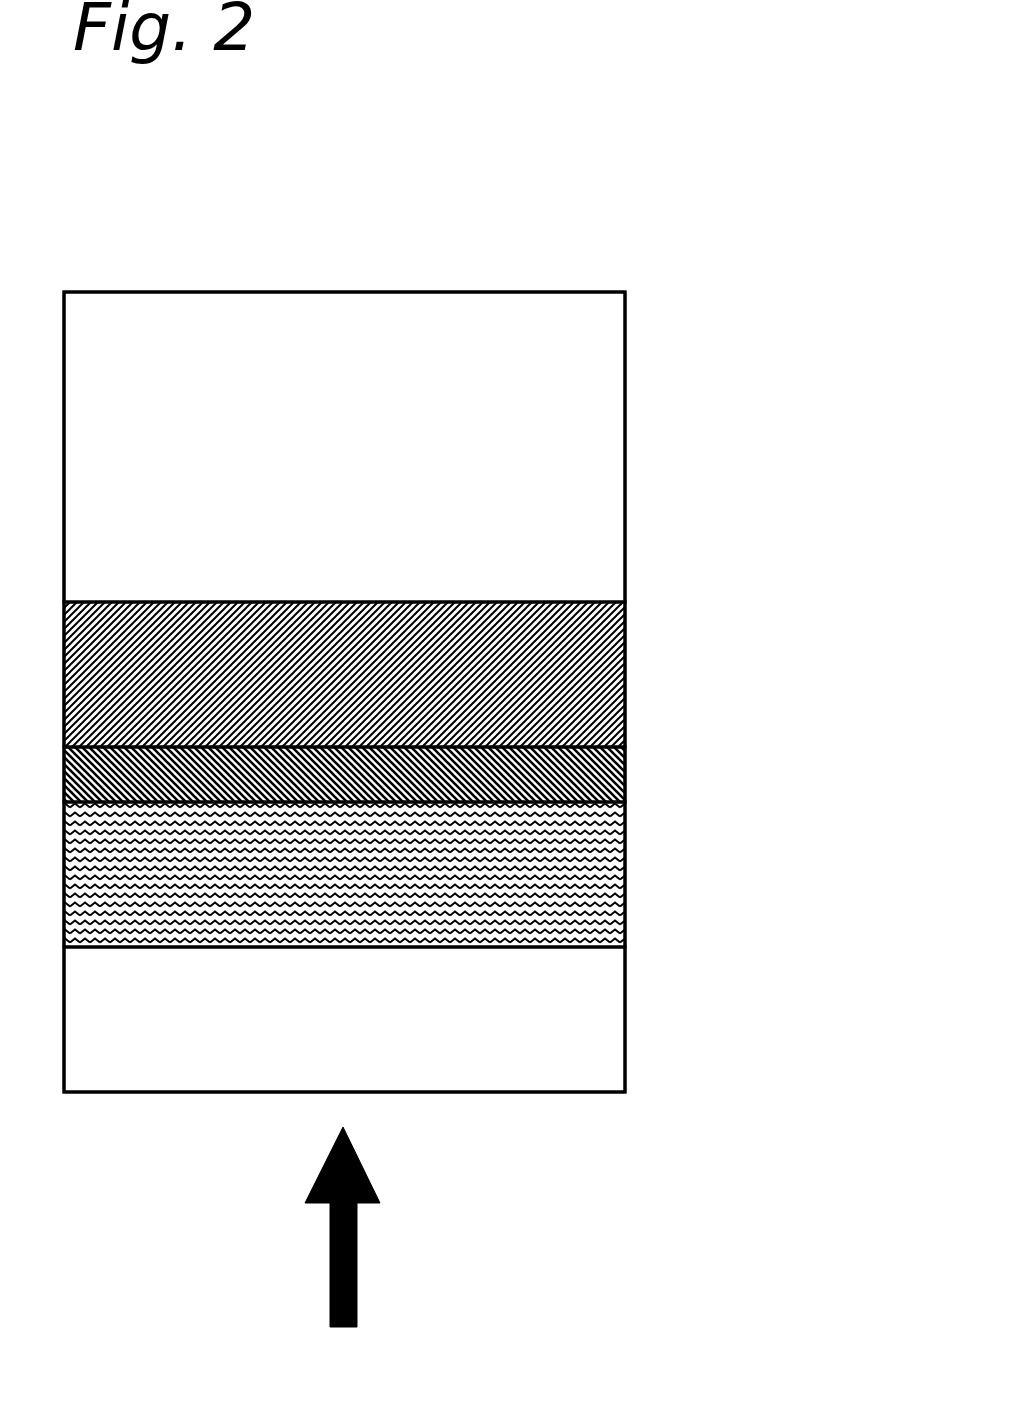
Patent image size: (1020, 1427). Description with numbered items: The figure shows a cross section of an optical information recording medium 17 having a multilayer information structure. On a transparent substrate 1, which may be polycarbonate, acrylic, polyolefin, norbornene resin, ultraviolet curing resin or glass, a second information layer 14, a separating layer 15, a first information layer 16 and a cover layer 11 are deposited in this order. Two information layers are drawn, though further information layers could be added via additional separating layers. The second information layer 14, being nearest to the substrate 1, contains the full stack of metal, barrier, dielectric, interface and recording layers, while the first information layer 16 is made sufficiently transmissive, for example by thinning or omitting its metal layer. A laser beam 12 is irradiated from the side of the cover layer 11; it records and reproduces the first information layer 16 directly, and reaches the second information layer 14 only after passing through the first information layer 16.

The optical information recording medium 17 is at (351, 258).
The substrate 1 is at (684, 446).
The second information layer 14 is at (681, 681).
The separating layer 15 is at (678, 781).
The first information layer 16 is at (678, 881).
The cover layer 11 is at (681, 1030).
The laser beam 12 is at (442, 1260).